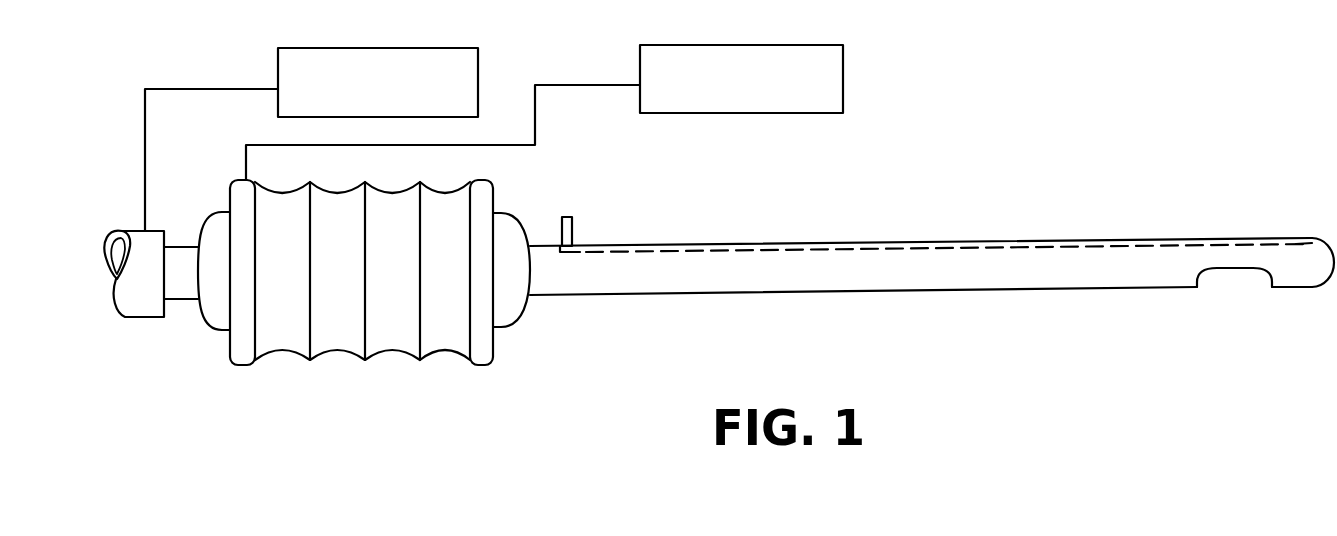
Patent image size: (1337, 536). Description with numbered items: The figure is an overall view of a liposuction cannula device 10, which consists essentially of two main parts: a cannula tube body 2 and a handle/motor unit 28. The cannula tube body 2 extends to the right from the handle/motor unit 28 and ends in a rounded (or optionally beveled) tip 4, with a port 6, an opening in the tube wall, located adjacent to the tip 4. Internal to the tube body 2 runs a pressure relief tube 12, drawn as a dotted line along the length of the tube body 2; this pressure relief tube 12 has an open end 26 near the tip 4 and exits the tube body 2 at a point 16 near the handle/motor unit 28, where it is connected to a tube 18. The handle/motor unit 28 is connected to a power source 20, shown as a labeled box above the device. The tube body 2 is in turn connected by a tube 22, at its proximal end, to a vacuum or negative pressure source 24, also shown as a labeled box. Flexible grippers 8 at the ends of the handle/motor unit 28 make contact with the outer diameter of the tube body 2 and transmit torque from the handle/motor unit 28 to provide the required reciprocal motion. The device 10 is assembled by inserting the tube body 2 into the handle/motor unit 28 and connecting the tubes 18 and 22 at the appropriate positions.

The cannula tube body 2 is at (183, 299).
The tip 4 is at (1315, 288).
The port 6 is at (1230, 268).
The flexible grippers 8 is at (222, 330).
The device 10 is at (908, 154).
The pressure relief tube 12 is at (775, 250).
The exit point 16 is at (573, 243).
The tube 18 is at (558, 233).
The power source 20 is at (843, 67).
The tube 22 is at (145, 317).
The vacuum source 24 is at (478, 73).
The open end 26 is at (1315, 233).
The handle/motor unit 28 is at (358, 361).